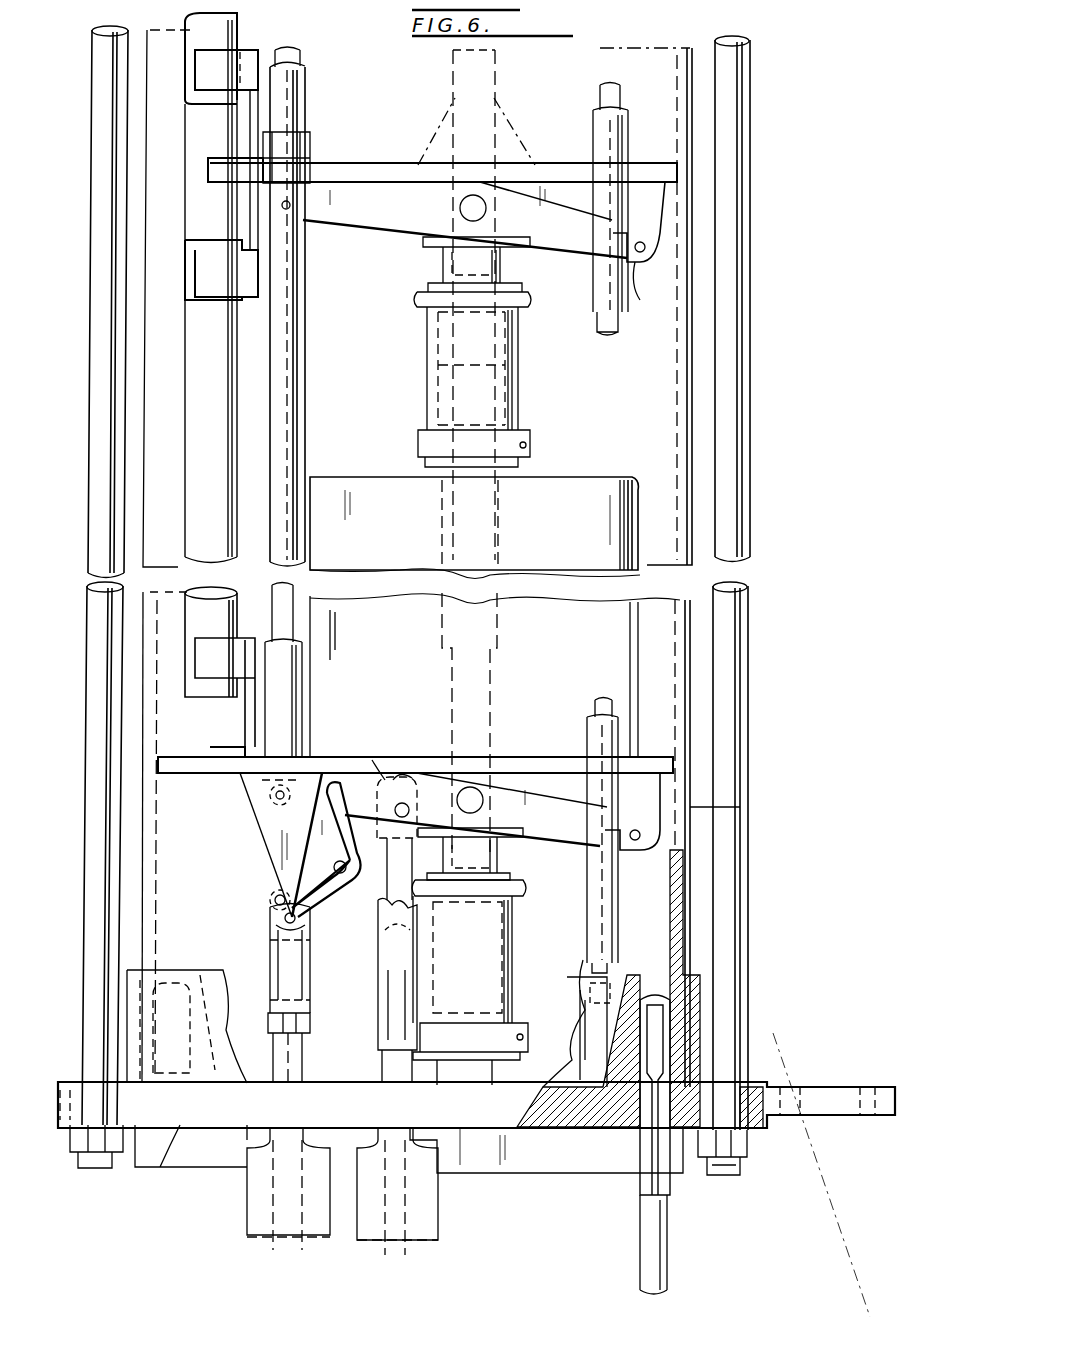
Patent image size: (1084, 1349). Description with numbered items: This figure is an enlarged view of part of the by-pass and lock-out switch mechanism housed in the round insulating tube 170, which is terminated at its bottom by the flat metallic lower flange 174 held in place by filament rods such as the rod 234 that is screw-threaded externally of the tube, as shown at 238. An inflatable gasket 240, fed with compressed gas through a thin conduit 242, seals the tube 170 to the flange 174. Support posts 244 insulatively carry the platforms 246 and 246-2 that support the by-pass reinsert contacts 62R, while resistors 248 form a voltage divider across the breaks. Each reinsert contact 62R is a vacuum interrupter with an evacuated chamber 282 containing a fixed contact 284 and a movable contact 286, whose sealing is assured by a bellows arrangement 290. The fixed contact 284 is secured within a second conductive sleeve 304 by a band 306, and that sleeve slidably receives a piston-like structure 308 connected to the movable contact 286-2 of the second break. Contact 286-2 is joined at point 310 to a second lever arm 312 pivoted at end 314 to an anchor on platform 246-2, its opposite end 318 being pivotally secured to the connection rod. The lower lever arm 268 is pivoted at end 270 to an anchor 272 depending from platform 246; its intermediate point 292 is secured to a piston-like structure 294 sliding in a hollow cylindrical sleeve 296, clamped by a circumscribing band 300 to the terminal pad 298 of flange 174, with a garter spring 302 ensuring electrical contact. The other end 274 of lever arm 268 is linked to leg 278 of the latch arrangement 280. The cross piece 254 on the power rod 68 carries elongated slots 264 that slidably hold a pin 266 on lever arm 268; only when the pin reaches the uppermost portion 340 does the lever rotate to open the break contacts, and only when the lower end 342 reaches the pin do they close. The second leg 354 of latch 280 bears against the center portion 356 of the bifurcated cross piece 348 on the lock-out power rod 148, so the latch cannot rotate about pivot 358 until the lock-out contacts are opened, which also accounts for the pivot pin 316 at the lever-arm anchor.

The filament rod 234 is at (750, 240).
The screw-threaded portion 238 is at (750, 1148).
The resistor 248 is at (183, 262).
The bellows arrangement 290 is at (440, 115).
The movable contact 286-2 is at (495, 83).
The movable contact 286 is at (500, 668).
The support post 244 is at (593, 130).
The second support platform 246-2 is at (648, 162).
The second lever arm 312 is at (400, 232).
The pivot pin 316 is at (643, 255).
The pivot end 314 is at (622, 292).
The connection point 310 is at (460, 208).
The opposite end 318 is at (282, 205).
The piston-like structure 308 is at (440, 262).
The second conductive sleeve 304 is at (518, 362).
The band 306 is at (532, 442).
The fixed contact 284 is at (500, 533).
The by-pass reinsert contact 62R is at (372, 450).
The evacuated chamber 282 is at (612, 462).
The support platform 246 is at (170, 775).
The uppermost portion of slot 340 is at (378, 770).
The lever arm 268 is at (578, 845).
The anchor 272 is at (662, 808).
The pivot point 270 is at (637, 842).
The intermediate point 292 is at (485, 801).
The piston-like structure 294 is at (498, 840).
The elongated slot 264 is at (415, 822).
The pin 266 is at (392, 806).
The leg of latch arrangement 278 is at (338, 828).
The latch arrangement 280 is at (248, 843).
The end of lever arm 274 is at (268, 800).
The lower end of slot 342 is at (338, 885).
The pivot point 358 is at (275, 900).
The second leg of latch arrangement 354 is at (312, 905).
The center portion 356 is at (312, 942).
The cross piece 348 is at (268, 972).
The cross piece 254 is at (375, 963).
The garter spring 302 is at (525, 898).
The hollow cylindrical sleeve 296 is at (513, 965).
The circumscribing band 300 is at (524, 1023).
The terminal pad 298 is at (492, 1075).
The power rod 68 is at (380, 1060).
The lock-out power rod 148 is at (277, 1198).
The inflatable gasket 240 is at (170, 1000).
The insulating tube 170 is at (692, 905).
The lower flange 174 is at (460, 1120).
The conduit 242 is at (640, 1255).